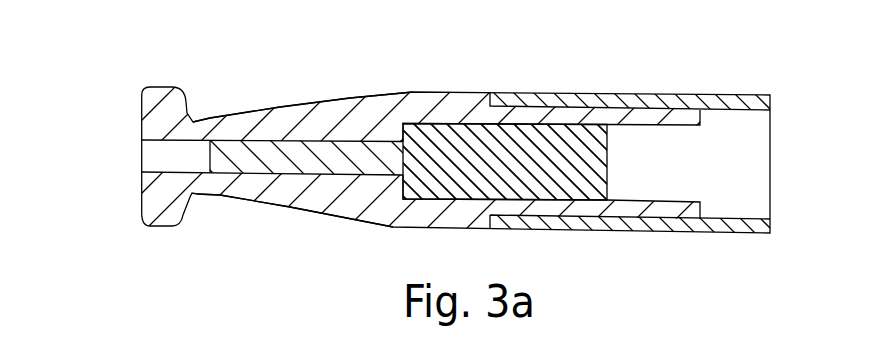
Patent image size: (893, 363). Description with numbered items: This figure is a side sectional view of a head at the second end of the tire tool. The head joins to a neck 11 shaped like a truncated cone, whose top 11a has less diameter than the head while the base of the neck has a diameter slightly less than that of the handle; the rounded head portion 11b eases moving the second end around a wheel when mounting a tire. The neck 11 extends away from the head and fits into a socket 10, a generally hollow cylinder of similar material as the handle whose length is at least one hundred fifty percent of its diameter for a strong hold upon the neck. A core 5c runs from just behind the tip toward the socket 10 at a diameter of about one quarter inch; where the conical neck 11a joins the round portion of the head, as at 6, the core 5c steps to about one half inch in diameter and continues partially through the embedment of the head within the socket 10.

The neck 11 is at (334, 56).
The top of the neck 11a is at (273, 111).
The flange head 11b is at (158, 87).
The socket 10 is at (680, 92).
The junction of conical neck and round portion of head 6 is at (437, 91).
The core 5c is at (210, 158).